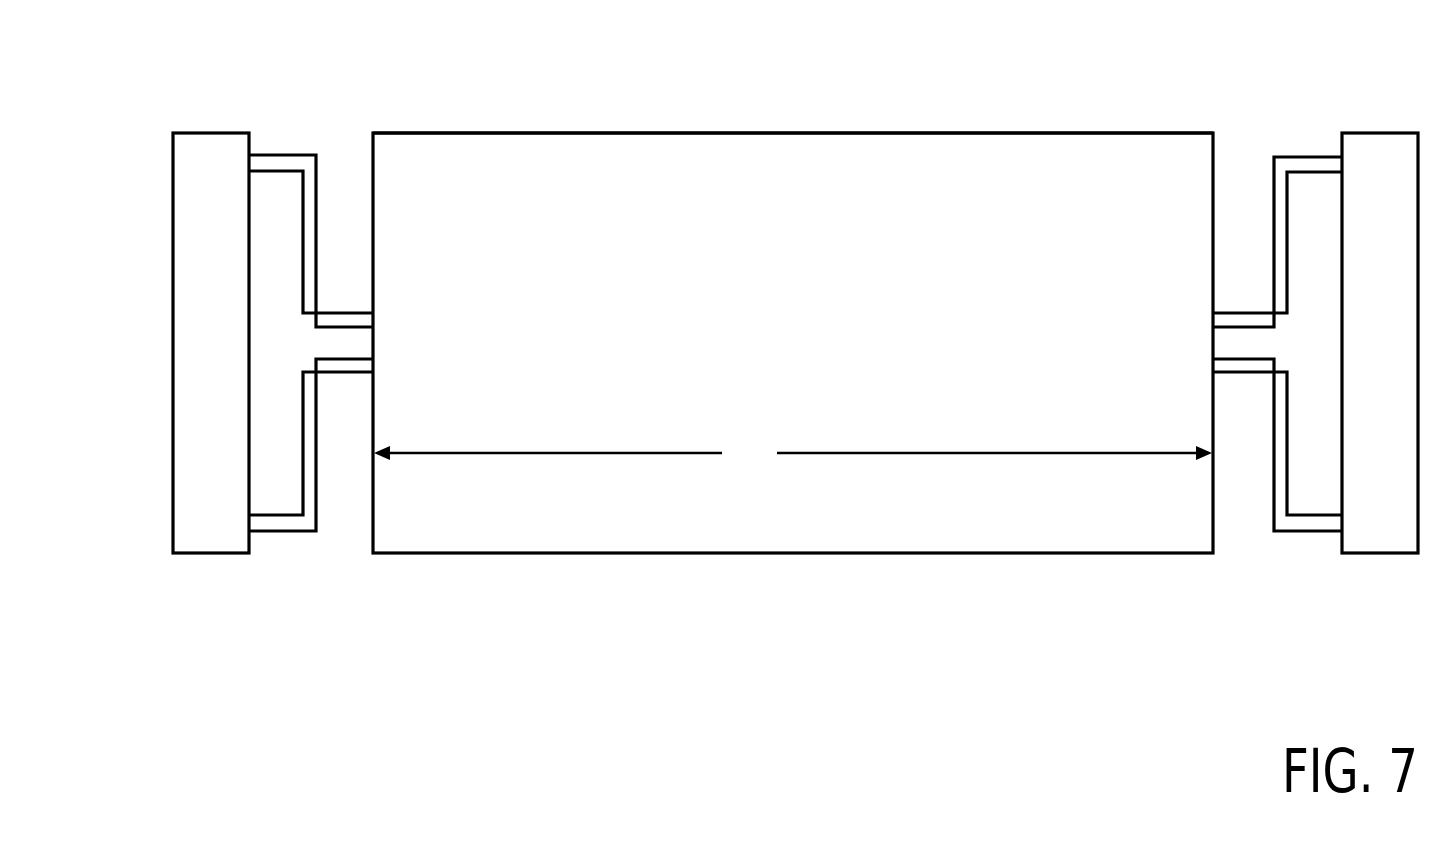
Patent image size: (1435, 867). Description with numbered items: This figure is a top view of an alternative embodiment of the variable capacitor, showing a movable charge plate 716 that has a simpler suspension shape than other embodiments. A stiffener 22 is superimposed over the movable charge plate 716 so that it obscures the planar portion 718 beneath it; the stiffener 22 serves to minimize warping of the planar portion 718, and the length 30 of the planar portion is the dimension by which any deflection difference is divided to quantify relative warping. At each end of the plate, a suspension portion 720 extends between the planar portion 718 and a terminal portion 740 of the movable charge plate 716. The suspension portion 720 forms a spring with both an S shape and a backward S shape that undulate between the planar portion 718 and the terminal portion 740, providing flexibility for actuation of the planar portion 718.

The movable charge plate 716 is at (920, 101).
The planar portion 718 is at (690, 192).
The stiffener 22 is at (744, 356).
The suspension portion 720 is at (288, 157).
The terminal portion 740 is at (200, 146).
The length 30 is at (793, 454).